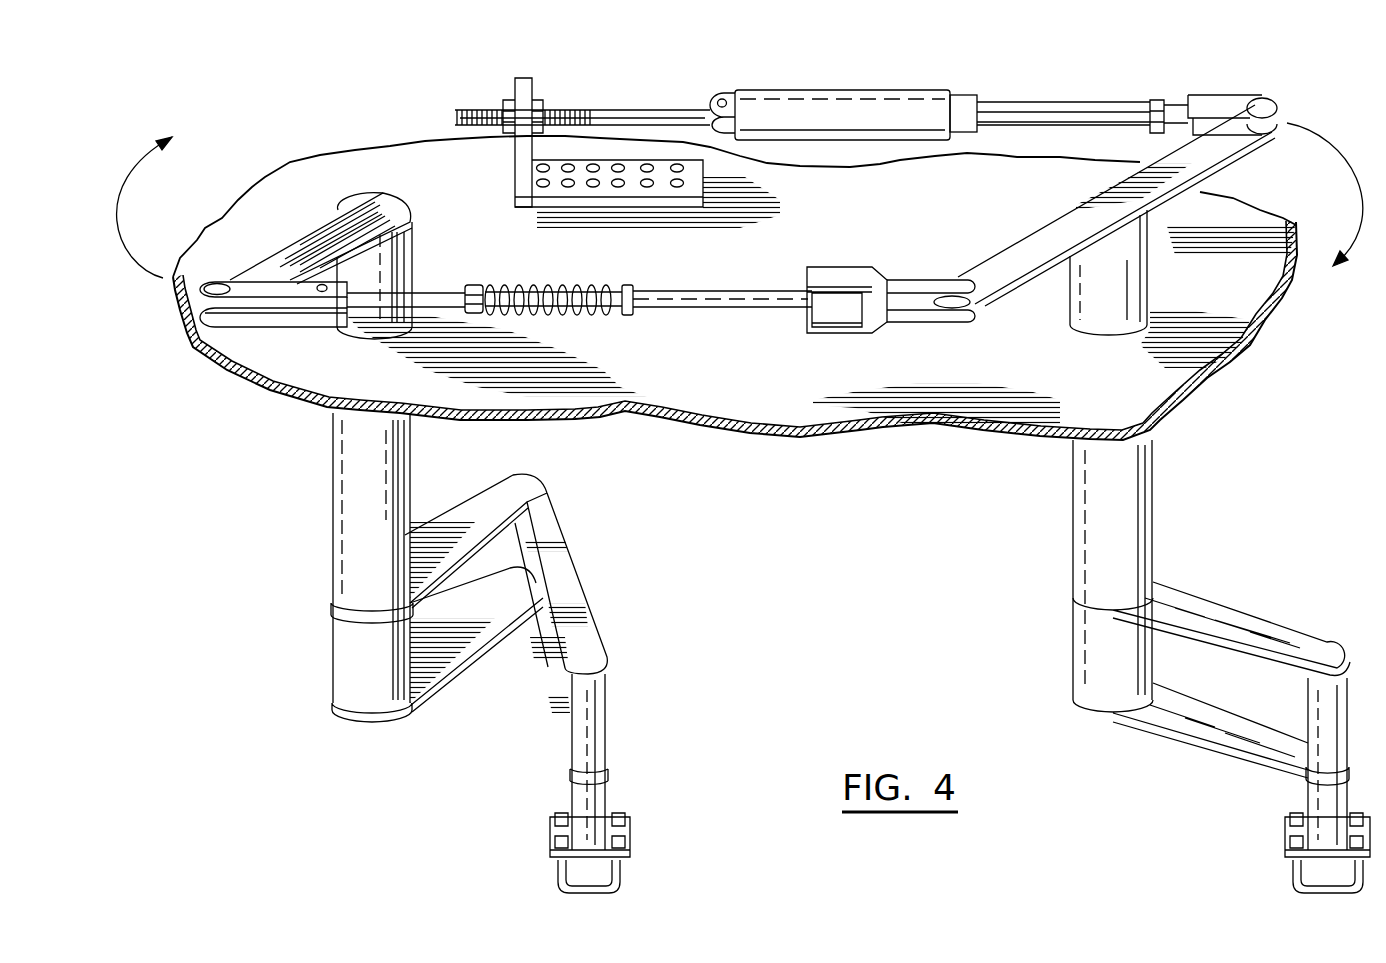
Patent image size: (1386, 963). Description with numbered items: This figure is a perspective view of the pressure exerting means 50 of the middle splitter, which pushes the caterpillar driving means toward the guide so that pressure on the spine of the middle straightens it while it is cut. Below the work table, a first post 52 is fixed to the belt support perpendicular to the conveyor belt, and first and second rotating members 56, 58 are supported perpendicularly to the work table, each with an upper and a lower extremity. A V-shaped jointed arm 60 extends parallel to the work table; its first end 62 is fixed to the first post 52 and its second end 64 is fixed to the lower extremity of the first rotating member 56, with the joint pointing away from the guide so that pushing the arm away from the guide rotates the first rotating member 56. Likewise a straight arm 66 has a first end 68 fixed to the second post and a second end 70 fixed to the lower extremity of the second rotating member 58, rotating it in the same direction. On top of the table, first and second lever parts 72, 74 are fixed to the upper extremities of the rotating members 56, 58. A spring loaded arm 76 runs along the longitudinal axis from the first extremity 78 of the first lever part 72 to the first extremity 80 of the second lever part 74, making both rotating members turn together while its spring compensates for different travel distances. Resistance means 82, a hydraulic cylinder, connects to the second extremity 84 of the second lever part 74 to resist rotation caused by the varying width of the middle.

The pressure exerting means 50 is at (826, 506).
The first post 52 is at (1348, 802).
The first rotating member 56 is at (352, 456).
The second rotating member 58 is at (1140, 478).
The V-shaped jointed arm 60 is at (525, 485).
The first end of the jointed arm 62 is at (598, 658).
The second end of the jointed arm 64 is at (409, 708).
The straight arm 66 is at (1240, 607).
The first end of the straight arm 68 is at (1330, 655).
The second end of the straight arm 70 is at (1128, 718).
The first lever part 72 is at (313, 235).
The second lever part 74 is at (1225, 148).
The spring loaded arm 76 is at (727, 296).
The first extremity of the first lever part 78 is at (212, 290).
The first extremity of the second lever part 80 is at (960, 320).
The resistance means (hydraulic cylinder) 82 is at (847, 102).
The second extremity of the second lever part 84 is at (1272, 102).